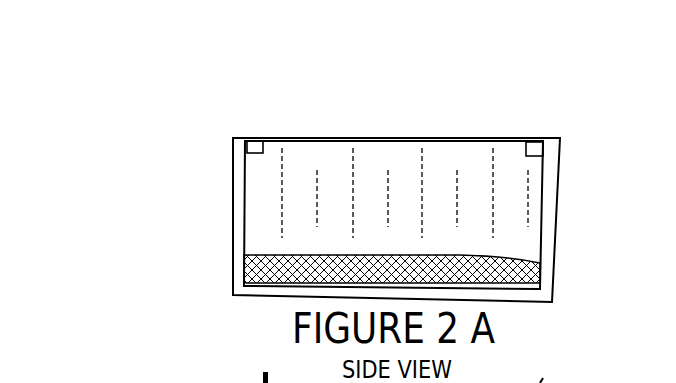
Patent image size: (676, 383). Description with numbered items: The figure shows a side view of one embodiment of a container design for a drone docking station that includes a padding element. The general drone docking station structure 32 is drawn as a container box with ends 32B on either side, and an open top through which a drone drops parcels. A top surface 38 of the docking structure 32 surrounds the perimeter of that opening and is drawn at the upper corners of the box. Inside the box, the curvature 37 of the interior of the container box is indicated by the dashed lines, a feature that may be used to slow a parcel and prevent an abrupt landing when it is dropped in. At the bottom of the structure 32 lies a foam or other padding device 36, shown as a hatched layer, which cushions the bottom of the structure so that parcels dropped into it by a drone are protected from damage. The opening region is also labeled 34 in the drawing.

In FIG. 2A, the drone docking station structure 32 is at (186, 178).
In FIG. 2A, the ends of structure 32B is at (237, 177).
In FIG. 2A, the open top of container 34 is at (396, 83).
In FIG. 2B, the open top of container 34 is at (230, 352).
In FIG. 2A, the foam or other padding device 36 is at (290, 270).
In FIG. 2A, the curvature of the interior of the container box 37 is at (405, 156).
In FIG. 2A, the top surface of docking structure 38 is at (434, 124).
In FIG. 2B, the top surface of docking structure 38 is at (576, 368).